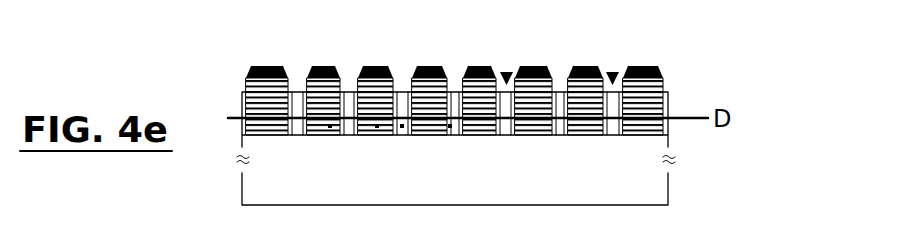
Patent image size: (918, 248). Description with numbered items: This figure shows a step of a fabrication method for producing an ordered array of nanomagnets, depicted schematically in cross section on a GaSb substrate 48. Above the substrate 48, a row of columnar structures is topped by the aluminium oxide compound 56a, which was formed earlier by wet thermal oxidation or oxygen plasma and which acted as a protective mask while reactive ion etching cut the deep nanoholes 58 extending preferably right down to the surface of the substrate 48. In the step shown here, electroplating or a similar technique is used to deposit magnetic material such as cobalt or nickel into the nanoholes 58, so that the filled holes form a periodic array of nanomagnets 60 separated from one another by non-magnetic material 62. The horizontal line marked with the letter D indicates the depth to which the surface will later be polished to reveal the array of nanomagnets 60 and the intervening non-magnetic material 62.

The GaSb substrate 48 is at (653, 183).
The aluminium oxide compound 56a is at (358, 75).
The nanoholes 58 is at (612, 78).
The nanomagnets 60 is at (402, 128).
The non-magnetic material 62 is at (330, 128).